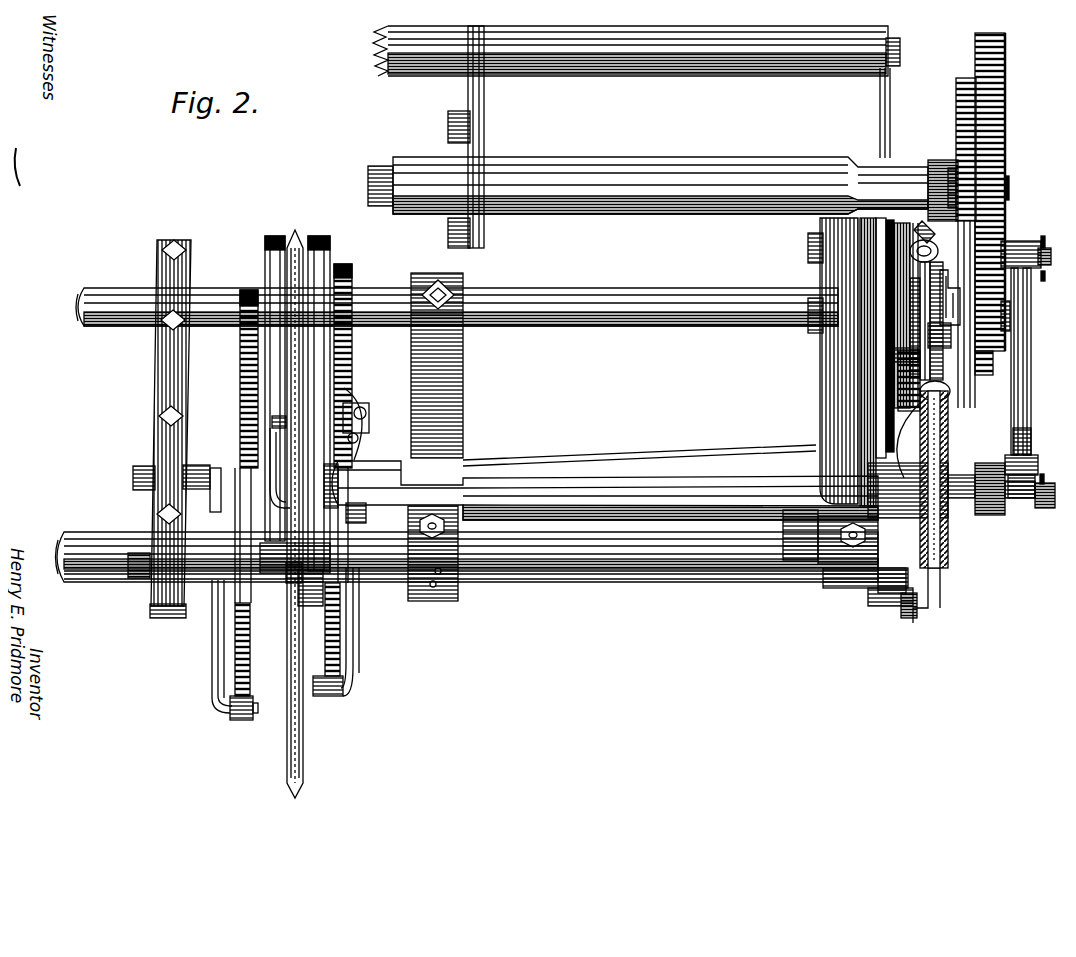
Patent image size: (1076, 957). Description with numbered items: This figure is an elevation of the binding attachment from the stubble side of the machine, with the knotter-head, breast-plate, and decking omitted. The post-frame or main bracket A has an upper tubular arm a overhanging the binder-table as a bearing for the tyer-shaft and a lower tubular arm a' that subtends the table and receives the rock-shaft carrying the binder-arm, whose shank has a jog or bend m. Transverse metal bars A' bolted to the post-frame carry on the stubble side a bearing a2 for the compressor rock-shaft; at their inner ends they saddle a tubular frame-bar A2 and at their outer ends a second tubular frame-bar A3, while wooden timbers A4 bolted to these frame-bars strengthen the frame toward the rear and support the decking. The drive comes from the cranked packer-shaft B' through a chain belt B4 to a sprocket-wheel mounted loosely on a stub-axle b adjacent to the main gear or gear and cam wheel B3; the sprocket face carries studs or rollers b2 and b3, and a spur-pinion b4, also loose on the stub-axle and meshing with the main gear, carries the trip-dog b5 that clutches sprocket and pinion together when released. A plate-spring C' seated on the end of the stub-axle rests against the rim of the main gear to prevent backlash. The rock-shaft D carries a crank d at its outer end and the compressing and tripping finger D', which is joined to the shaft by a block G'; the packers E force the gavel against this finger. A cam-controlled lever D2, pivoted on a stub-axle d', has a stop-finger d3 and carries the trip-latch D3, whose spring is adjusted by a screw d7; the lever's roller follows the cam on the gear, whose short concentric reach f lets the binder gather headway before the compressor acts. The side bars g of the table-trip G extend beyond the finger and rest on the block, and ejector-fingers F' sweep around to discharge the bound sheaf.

The tubular arm or sleeve a is at (648, 185).
The second tubular arm or sleeve a' is at (601, 482).
The bearing a2 is at (850, 585).
The post-frame or main bracket A is at (869, 362).
The transverse metal bars A' is at (624, 450).
The tubular frame-bar A2 is at (457, 307).
The second tubular frame-bar A3 is at (467, 557).
The wooden cross pieces or timbers A4 is at (150, 368).
The stub-axle b is at (798, 294).
The stud or roller b2 is at (930, 414).
The stud or roller b3 is at (875, 267).
The spur-pinion b4 is at (980, 368).
The trip-dog b5 is at (875, 330).
The cranked packer-shaft B' is at (177, 476).
The main gear or gear and cam wheel B3 is at (998, 136).
The chain belt B4 is at (934, 418).
The plate-spring C' is at (1033, 383).
The crank d is at (912, 620).
The stub-axle d' is at (798, 248).
The stop-finger d3 is at (933, 241).
The screw d7 is at (875, 238).
The rock-shaft D is at (471, 594).
The compressing and tripping finger D' is at (275, 468).
The cam-controlled lever D2 is at (856, 298).
The trip-latch D3 is at (875, 359).
The packers E is at (232, 348).
The short concentric reach f is at (882, 566).
The ejector-fingers F' is at (962, 243).
The side bars g is at (325, 524).
The table-trip G is at (276, 403).
The block G' is at (310, 588).
The jog or bend m is at (274, 429).
The blade M is at (288, 224).